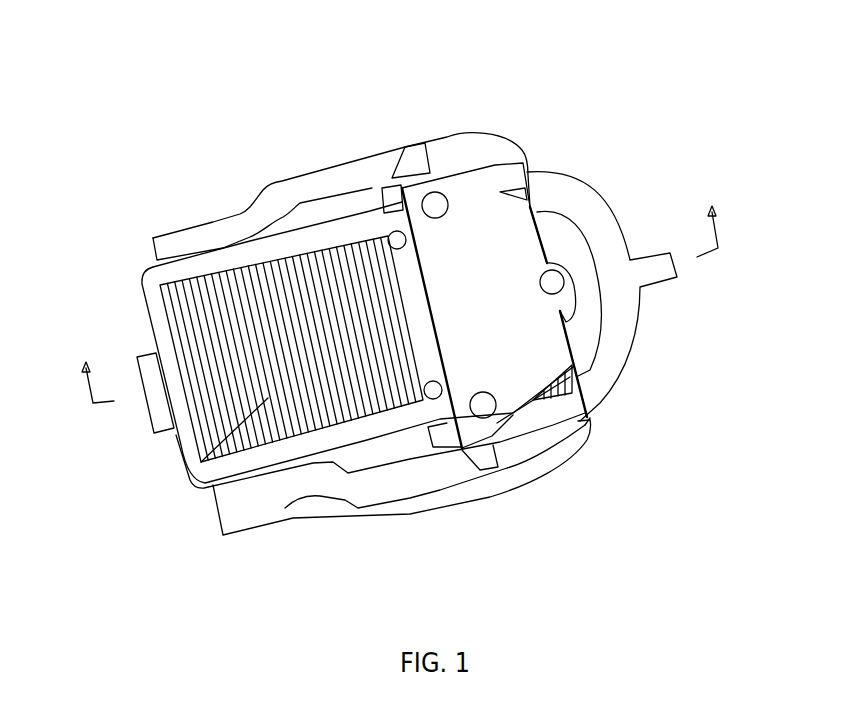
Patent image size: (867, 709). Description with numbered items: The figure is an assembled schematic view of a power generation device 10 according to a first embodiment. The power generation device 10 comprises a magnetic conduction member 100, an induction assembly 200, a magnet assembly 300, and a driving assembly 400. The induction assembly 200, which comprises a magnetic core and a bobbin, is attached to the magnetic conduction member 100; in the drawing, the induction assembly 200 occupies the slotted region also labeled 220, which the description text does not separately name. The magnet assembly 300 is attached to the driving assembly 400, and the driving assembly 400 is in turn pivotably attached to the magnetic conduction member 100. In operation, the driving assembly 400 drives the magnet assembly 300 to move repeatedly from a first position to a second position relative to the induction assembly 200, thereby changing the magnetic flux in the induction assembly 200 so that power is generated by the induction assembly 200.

The power generation device 10 is at (377, 52).
The magnetic conduction member 100 is at (187, 447).
The induction assembly 200 is at (227, 267).
The heat dissipation holes 220 is at (220, 460).
The magnet assembly 300 is at (493, 220).
The driving assembly 400 is at (558, 425).